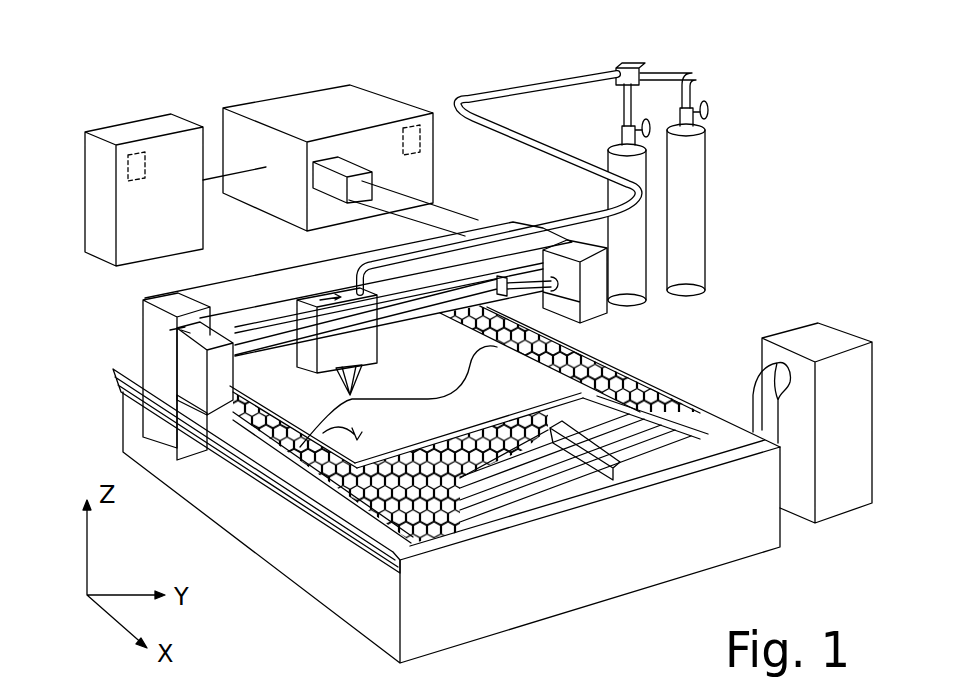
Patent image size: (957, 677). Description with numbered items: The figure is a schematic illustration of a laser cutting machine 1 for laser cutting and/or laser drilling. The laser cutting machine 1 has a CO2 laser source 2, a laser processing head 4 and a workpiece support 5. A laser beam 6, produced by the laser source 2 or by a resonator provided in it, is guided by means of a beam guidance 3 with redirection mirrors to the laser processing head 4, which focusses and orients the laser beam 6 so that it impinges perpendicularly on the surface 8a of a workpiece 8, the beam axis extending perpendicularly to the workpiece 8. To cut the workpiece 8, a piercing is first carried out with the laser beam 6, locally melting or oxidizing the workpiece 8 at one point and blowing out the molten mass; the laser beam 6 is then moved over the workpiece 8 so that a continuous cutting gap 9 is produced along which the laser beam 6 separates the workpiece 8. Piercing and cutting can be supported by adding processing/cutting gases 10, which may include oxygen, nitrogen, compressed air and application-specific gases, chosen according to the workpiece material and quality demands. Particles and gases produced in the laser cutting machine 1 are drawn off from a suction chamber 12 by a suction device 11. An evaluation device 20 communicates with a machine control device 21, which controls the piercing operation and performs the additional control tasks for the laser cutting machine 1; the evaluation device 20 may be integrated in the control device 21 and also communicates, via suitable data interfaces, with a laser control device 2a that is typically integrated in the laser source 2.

The laser cutting machine 1 is at (478, 69).
The laser source 2 is at (322, 105).
The laser control device 2a is at (410, 128).
The beam guidance 3 is at (520, 290).
The laser processing head 4 is at (330, 338).
The workpiece support 5 is at (367, 503).
The laser beam 6 is at (366, 376).
The workpiece 8 is at (560, 398).
The surface of the workpiece 8a is at (297, 432).
The cutting gap 9 is at (450, 388).
The processing/cutting gases 10 is at (689, 208).
The suction device 11 is at (820, 345).
The suction chamber 12 is at (578, 478).
The evaluation device 20 is at (128, 165).
The machine control device 21 is at (128, 130).